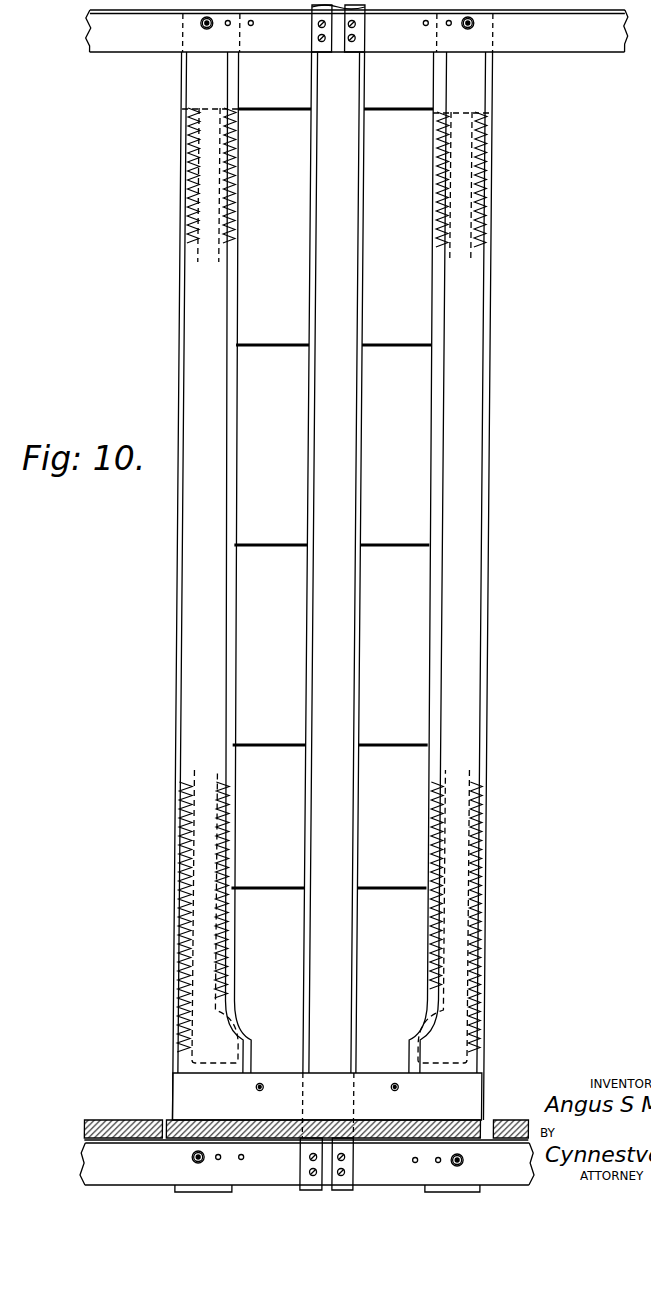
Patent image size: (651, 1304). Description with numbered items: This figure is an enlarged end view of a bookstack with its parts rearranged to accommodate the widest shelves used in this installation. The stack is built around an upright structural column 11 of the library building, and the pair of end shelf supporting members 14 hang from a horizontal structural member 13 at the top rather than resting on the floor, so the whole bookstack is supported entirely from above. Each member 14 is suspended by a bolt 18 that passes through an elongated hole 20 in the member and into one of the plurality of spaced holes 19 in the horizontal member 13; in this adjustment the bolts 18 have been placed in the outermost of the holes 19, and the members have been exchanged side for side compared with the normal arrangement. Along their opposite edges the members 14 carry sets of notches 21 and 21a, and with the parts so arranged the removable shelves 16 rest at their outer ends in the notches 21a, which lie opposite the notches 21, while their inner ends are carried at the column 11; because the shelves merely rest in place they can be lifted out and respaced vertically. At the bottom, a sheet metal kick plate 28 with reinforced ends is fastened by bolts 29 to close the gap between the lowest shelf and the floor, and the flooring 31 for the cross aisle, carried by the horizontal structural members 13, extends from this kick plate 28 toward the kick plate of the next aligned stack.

The structural column 11 is at (346, 304).
The horizontal structural member 13 is at (131, 38).
The end shelf supporting member 14 is at (200, 373).
The removable shelf 16 is at (259, 110).
The bolt 18 is at (206, 27).
The spaced hole 19 is at (252, 27).
The elongated hole 20 is at (212, 27).
The notch 21 is at (234, 190).
The notch 21a is at (188, 185).
The kick plate 28 is at (450, 1098).
The bolt 29 is at (392, 1089).
The flooring 31 is at (232, 1120).